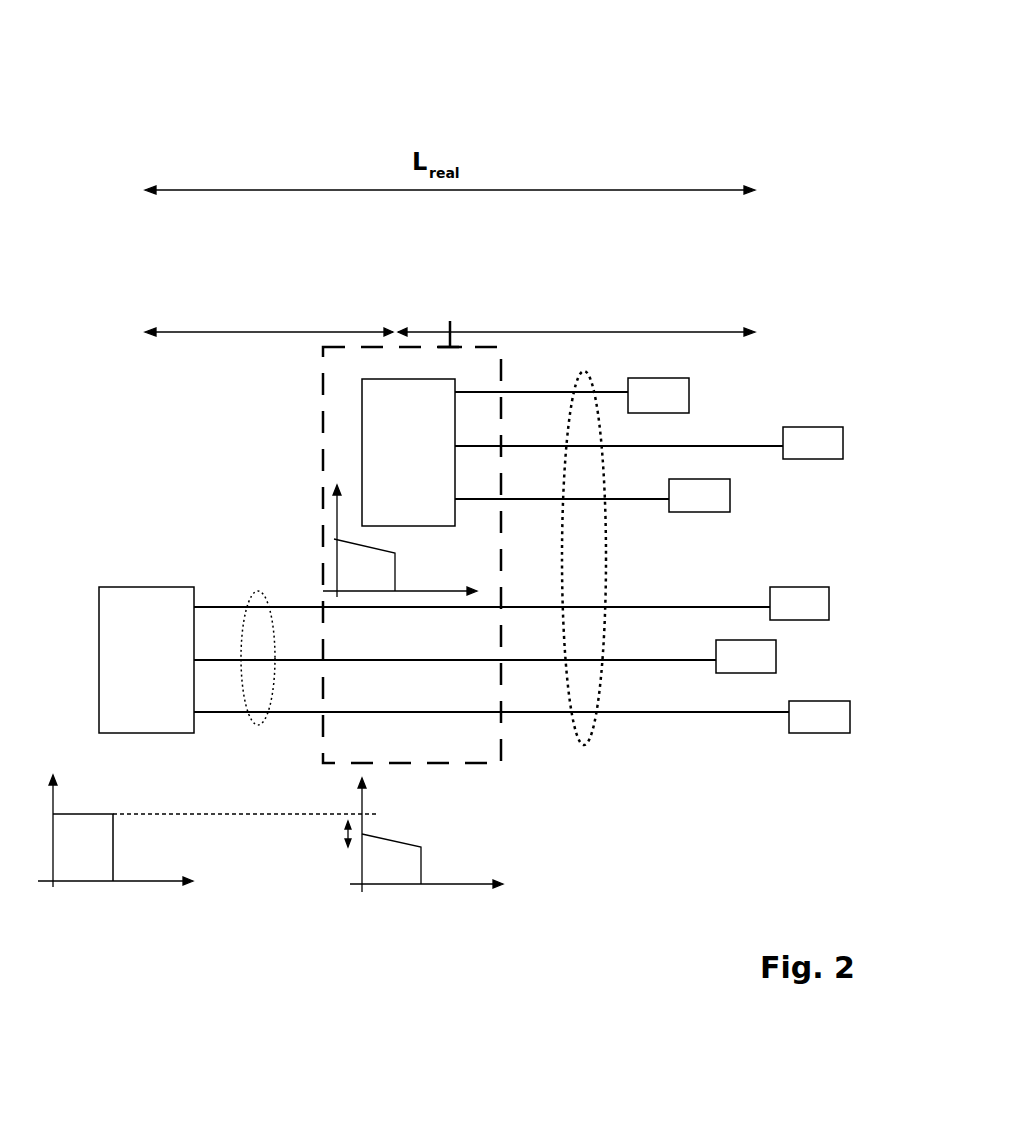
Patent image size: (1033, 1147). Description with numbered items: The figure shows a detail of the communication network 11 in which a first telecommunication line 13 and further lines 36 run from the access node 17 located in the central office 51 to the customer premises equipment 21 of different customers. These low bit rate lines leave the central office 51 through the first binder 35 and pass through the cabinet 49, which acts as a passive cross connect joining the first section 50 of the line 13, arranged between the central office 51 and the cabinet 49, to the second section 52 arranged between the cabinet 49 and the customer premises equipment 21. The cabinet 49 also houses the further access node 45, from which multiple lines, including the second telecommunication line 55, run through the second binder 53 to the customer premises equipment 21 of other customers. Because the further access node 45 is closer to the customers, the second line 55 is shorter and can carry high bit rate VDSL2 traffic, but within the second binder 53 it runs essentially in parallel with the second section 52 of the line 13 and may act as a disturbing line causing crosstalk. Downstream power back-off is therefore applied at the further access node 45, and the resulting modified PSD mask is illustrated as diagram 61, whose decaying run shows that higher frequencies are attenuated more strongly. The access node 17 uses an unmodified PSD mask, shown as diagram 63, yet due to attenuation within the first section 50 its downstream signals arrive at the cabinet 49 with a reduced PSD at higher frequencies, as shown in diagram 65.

The communication network 11 is at (105, 98).
The first telecommunication line 13 is at (653, 605).
The access node 17 is at (161, 583).
The customer premises equipment 21 is at (810, 427).
The first binder 35 is at (257, 590).
The lines 36 is at (622, 660).
The further access node 45 is at (362, 405).
The cabinet 49 is at (459, 296).
The first section 50 is at (303, 330).
The central office 51 is at (97, 482).
The second section 52 is at (631, 330).
The second binder 53 is at (590, 745).
The second telecommunication line 55 is at (665, 446).
The diagram of modified PSD mask 61 is at (336, 557).
The diagram of unmodified PSD mask 63 is at (85, 822).
The diagram of attenuated PSD 65 is at (388, 848).